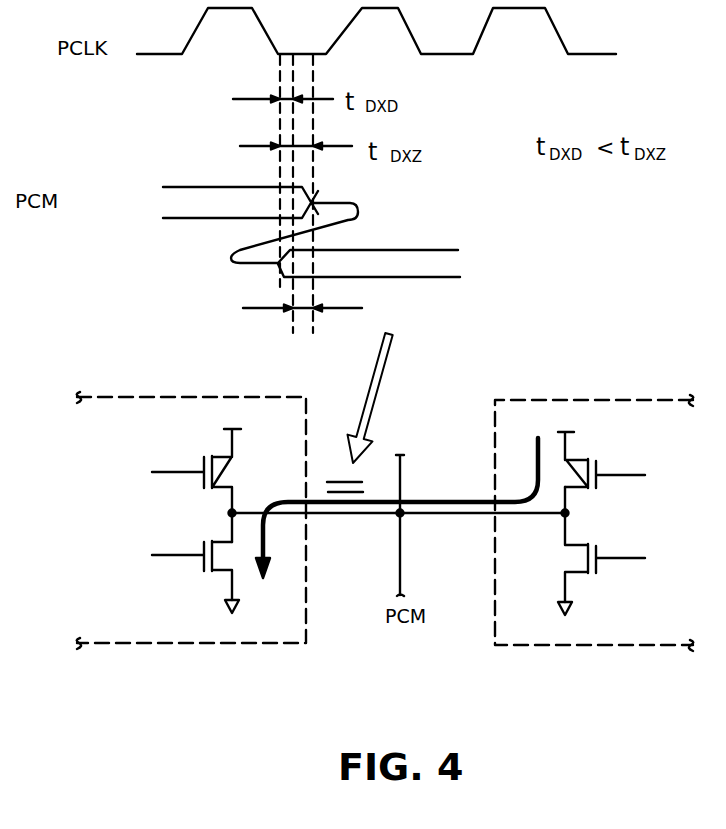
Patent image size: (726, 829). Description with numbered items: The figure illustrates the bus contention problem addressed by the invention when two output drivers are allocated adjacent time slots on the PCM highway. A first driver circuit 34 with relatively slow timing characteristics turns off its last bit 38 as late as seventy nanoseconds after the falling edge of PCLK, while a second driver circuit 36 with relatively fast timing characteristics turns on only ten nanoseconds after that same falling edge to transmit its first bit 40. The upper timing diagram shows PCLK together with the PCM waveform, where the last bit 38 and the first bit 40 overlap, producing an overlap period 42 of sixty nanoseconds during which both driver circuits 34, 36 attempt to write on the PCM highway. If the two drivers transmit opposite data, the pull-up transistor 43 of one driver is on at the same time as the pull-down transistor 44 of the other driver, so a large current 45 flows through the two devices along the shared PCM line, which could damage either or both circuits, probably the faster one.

The first driver circuit 34 is at (191, 541).
The second driver circuit 36 is at (594, 541).
The last bit 38 is at (212, 186).
The first bit 40 is at (397, 251).
The overlap period 42 is at (348, 311).
The pull-up transistor 43 is at (580, 460).
The pull-down transistor 44 is at (220, 572).
The large current 45 is at (423, 495).